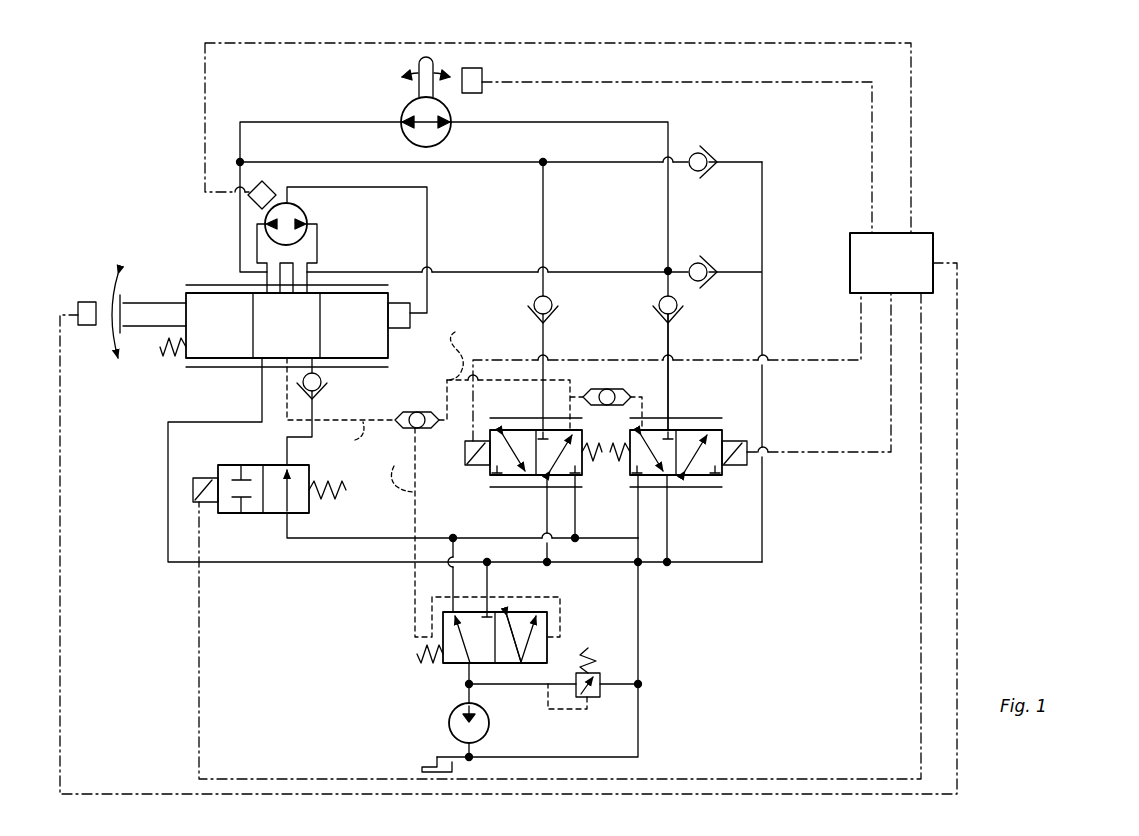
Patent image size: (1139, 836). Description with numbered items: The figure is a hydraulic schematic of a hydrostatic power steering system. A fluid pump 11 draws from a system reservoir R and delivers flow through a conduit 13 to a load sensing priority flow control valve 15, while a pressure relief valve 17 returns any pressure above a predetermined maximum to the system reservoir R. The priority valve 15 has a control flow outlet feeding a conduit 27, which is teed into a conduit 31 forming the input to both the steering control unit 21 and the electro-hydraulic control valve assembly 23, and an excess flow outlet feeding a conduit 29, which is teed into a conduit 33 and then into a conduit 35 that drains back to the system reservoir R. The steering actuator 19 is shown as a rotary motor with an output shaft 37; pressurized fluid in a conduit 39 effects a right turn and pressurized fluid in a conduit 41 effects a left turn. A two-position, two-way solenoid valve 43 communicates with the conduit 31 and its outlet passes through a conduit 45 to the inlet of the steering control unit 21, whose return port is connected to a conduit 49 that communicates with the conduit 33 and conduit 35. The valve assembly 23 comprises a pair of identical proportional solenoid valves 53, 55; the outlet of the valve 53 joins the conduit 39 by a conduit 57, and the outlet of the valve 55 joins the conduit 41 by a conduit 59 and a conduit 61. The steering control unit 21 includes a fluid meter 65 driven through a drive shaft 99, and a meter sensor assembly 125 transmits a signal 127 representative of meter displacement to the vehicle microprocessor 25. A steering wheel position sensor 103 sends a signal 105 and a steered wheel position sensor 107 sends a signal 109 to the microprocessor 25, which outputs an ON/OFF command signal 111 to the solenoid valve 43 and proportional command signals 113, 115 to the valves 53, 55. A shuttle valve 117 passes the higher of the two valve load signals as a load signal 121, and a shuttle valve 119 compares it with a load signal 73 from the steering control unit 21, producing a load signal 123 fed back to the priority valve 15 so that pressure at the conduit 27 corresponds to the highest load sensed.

The fluid pump 11 is at (458, 704).
The conduit 13 is at (456, 673).
The load sensing priority flow control valve 15 is at (379, 626).
The pressure relief valve 17 is at (600, 707).
The steering actuator 19 is at (395, 101).
The steering control unit 21 is at (190, 260).
The electro-hydraulic control valve assembly 23 is at (715, 497).
The vehicle microprocessor 25 is at (928, 215).
The conduit 27 is at (449, 576).
The conduit 29 is at (490, 594).
The conduit 31 is at (340, 538).
The conduit 33 is at (708, 562).
The conduit 35 is at (639, 623).
The output shaft 37 is at (417, 59).
The conduit 39 is at (565, 122).
The conduit 41 is at (294, 122).
The solenoid valve 43 is at (260, 520).
The conduit 45 is at (321, 404).
The conduit 49 is at (262, 398).
The proportional solenoid valve 53 is at (697, 430).
The proportional solenoid valve 55 is at (508, 496).
The conduit 57 is at (668, 396).
The conduit 59 is at (556, 288).
The conduit 61 is at (458, 164).
The fluid meter 65 is at (305, 212).
The load signal 73 is at (356, 440).
The drive shaft 99 is at (358, 188).
The steering wheel position sensor 103 is at (90, 298).
The signal 105 is at (957, 575).
The steered wheel position sensor 107 is at (478, 64).
The signal 109 is at (698, 82).
The ON/OFF command signal 111 is at (920, 668).
The proportional command signal 113 is at (877, 450).
The proportional command signal 115 is at (850, 358).
The shuttle valve 117 is at (594, 392).
The shuttle valve 119 is at (401, 410).
The load signal 121 is at (539, 376).
The load signal 123 is at (459, 532).
The meter sensor assembly 125 is at (271, 182).
The signal 127 is at (205, 110).
The system reservoir R is at (420, 771).